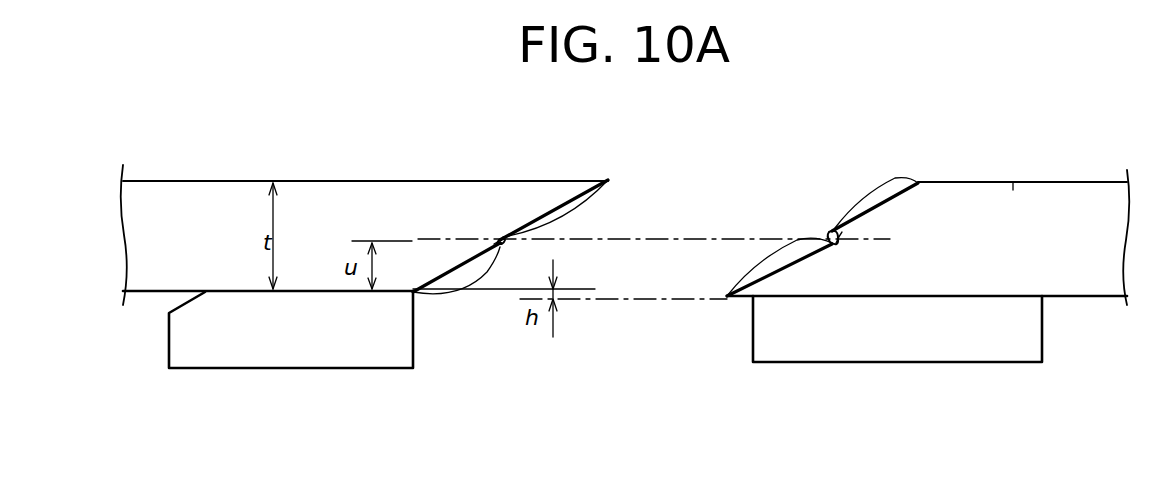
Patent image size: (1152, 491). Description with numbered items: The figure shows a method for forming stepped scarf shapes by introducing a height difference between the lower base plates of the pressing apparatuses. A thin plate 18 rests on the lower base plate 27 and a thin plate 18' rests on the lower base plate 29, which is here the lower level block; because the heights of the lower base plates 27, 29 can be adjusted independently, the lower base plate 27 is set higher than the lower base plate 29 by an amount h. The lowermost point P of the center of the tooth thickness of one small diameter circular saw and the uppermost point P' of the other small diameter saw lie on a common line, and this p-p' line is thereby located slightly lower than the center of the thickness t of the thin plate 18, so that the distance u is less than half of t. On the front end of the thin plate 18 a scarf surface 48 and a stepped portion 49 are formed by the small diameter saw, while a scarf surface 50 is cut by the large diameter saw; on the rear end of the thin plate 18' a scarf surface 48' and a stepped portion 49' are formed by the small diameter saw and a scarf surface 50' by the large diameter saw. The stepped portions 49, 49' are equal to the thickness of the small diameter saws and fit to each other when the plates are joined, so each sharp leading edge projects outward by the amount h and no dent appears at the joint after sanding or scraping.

The thin plate 18 is at (364, 214).
The thin plate 18' is at (928, 215).
The lower base plate 27 is at (228, 352).
The lower base plate 29 is at (995, 350).
The scarf surface 48 is at (568, 210).
The scarf surface 48' is at (756, 267).
The stepped portion 49 is at (477, 186).
The stepped portion 49' is at (905, 225).
The scarf surface 50 is at (456, 297).
The scarf surface 50' is at (876, 180).
The lowermost point of the center of the tooth thickness P is at (517, 185).
The uppermost point of the center of the tooth thickness P' is at (844, 186).